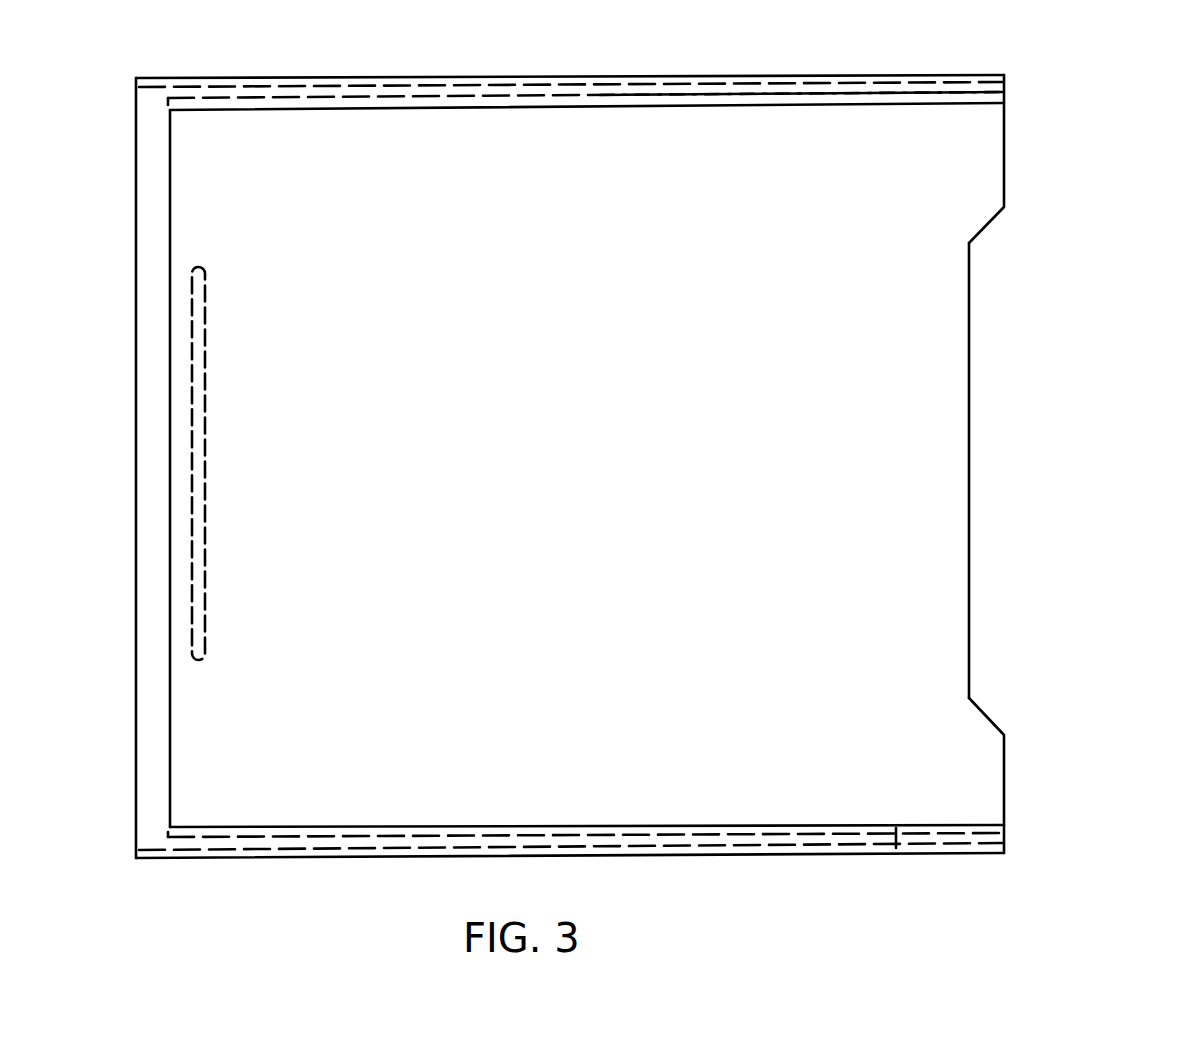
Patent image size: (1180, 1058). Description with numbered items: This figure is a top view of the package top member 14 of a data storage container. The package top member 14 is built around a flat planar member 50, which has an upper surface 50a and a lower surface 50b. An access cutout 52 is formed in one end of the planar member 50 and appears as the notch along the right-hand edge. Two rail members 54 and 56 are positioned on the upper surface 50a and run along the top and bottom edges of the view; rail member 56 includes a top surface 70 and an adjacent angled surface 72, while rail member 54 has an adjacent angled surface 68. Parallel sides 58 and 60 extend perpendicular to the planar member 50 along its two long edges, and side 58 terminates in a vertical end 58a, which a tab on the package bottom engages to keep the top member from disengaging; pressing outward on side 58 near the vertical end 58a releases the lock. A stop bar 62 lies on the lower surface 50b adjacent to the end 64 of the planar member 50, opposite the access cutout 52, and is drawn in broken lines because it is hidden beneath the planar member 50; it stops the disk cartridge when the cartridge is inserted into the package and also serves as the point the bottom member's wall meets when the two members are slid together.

The package top member 14 is at (990, 527).
The planar member 50 is at (510, 453).
The upper surface 50a is at (680, 457).
The lower surface 50b is at (945, 447).
The access cutout 52 is at (969, 340).
The rail member 54 is at (440, 842).
The rail member 56 is at (462, 88).
The side 58 is at (285, 80).
The vertical end 58a is at (897, 845).
The side 60 is at (300, 858).
The stop bar 62 is at (195, 370).
The end 64 is at (150, 488).
The angled surface 68 is at (700, 835).
The top surface 70 is at (668, 90).
The angled surface 72 is at (555, 104).